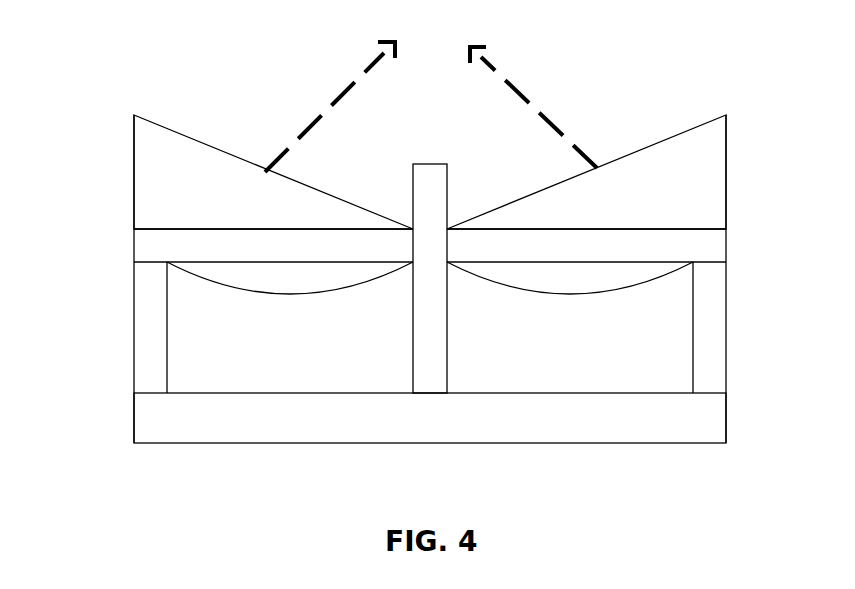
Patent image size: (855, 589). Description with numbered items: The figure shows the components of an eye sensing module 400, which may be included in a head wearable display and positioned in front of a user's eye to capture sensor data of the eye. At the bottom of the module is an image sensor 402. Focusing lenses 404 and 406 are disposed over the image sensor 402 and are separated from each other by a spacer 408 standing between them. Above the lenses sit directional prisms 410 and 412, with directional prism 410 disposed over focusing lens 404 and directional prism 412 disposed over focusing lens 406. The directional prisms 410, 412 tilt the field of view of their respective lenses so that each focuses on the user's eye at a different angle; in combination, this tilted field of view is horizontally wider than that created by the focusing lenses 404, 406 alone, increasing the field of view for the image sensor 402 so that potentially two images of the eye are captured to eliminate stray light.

The eye sensing module 400 is at (799, 490).
The image sensor 402 is at (430, 410).
The focusing lens 404 is at (207, 279).
The focusing lens 406 is at (643, 279).
The spacer 408 is at (429, 188).
The directional prism 410 is at (150, 197).
The directional prism 412 is at (692, 205).